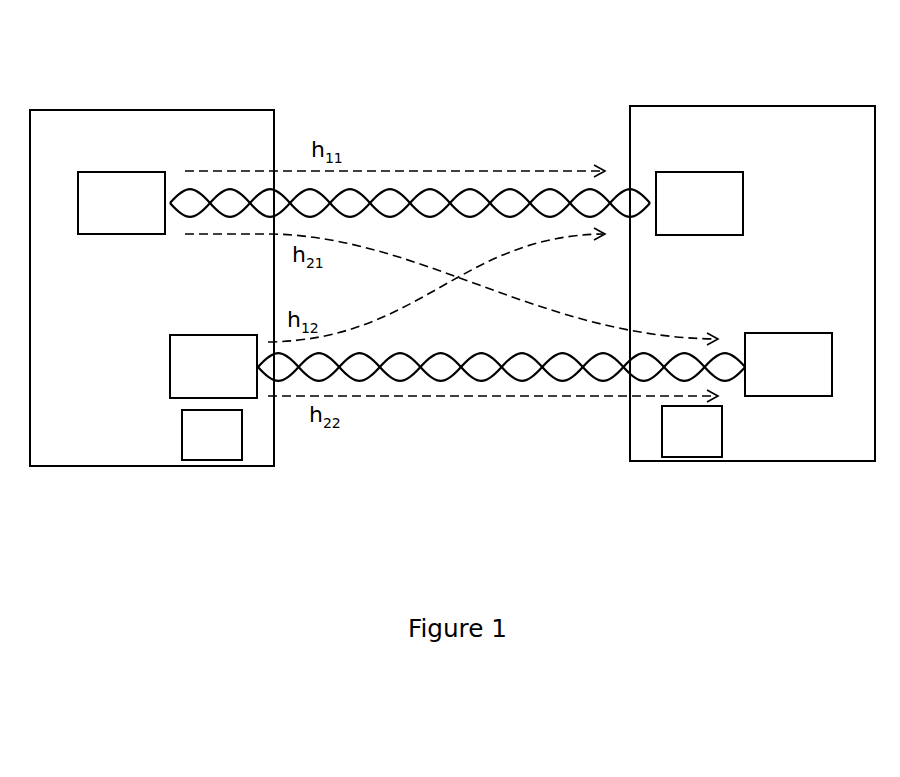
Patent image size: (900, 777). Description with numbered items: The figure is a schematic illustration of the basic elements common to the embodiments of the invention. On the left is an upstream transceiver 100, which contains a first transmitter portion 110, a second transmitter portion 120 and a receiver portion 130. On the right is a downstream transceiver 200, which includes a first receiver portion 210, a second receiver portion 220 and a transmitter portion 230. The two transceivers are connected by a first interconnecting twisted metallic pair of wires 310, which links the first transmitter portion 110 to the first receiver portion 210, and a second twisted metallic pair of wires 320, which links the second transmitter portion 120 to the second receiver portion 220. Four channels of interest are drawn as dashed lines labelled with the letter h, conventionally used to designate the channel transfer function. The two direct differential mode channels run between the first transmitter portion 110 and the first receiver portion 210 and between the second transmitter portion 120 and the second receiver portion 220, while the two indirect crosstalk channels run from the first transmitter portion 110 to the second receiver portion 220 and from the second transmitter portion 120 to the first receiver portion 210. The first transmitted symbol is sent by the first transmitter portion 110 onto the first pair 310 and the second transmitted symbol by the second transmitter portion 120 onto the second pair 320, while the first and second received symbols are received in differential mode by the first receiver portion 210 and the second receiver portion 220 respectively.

The upstream transceiver 100 is at (70, 110).
The first transmitter portion 110 is at (128, 237).
The second transmitter portion 120 is at (170, 383).
The receiver portion 130 is at (185, 423).
The downstream transceiver 200 is at (792, 106).
The first receiver portion 210 is at (745, 182).
The second receiver portion 220 is at (763, 332).
The transmitter portion 230 is at (722, 432).
The first twisted metallic pair of wires 310 is at (433, 192).
The second twisted metallic pair of wires 320 is at (405, 380).